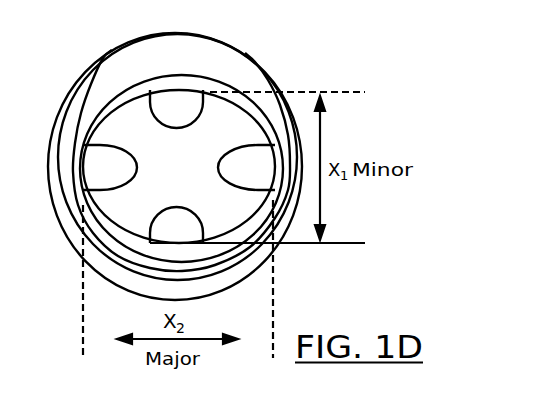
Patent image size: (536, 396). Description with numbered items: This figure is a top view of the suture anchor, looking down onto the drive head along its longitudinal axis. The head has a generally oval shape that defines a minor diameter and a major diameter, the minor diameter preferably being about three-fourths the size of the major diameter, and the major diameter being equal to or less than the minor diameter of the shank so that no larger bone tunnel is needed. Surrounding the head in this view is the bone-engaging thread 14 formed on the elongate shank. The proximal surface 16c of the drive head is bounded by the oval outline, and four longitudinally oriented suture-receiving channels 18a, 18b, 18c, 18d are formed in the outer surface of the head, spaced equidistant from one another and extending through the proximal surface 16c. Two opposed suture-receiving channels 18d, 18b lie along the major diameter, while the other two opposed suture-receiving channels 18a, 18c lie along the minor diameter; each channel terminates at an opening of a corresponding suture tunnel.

The bone-engaging thread 14 is at (162, 64).
The proximal surface 16c is at (157, 172).
The suture-receiving channel 18a is at (160, 118).
The suture-receiving channel 18b is at (235, 181).
The suture-receiving channel 18c is at (190, 240).
The suture-receiving channel 18d is at (85, 181).